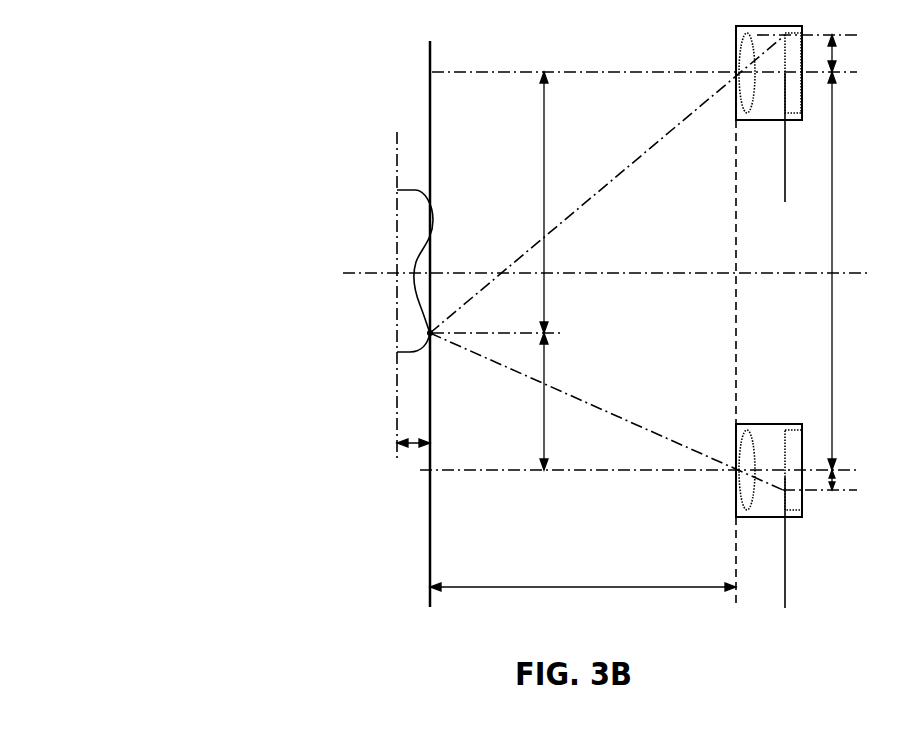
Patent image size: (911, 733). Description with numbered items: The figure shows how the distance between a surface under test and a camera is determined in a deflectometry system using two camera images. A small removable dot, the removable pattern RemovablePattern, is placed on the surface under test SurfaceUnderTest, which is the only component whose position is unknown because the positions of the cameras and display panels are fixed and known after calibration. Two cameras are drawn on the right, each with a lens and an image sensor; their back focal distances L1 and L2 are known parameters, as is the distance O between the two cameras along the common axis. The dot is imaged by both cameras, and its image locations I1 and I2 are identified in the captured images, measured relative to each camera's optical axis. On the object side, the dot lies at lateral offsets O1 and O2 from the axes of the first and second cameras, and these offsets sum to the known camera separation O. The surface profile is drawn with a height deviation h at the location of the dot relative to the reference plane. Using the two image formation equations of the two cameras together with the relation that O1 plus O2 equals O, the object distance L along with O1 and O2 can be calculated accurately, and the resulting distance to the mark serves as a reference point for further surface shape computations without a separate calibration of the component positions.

The surface under test SurfaceUnderTest is at (398, 194).
The removable pattern RemovablePattern is at (430, 333).
The back focal distance of the first camera L1 is at (785, 193).
The back focal distance of the second camera L2 is at (785, 585).
The object offset of the first camera O1 is at (555, 202).
The object offset of the second camera O2 is at (555, 408).
The distance between two cameras O is at (846, 271).
The image location in the first camera I1 is at (855, 56).
The image location in the second camera I2 is at (849, 487).
The surface height h is at (413, 429).
The distance between surface under test and camera L is at (583, 576).